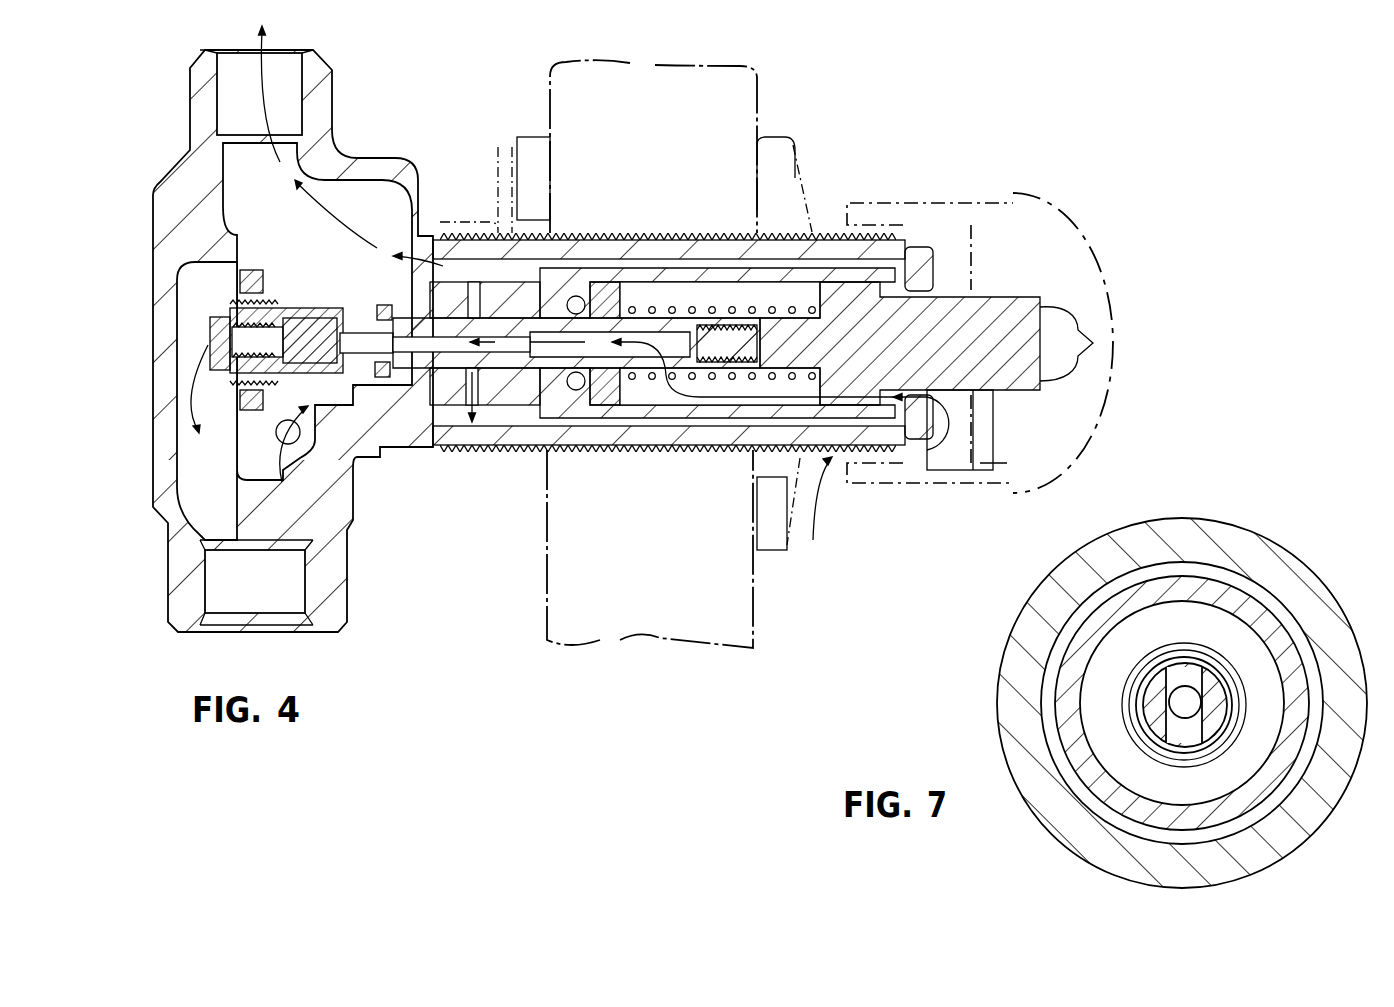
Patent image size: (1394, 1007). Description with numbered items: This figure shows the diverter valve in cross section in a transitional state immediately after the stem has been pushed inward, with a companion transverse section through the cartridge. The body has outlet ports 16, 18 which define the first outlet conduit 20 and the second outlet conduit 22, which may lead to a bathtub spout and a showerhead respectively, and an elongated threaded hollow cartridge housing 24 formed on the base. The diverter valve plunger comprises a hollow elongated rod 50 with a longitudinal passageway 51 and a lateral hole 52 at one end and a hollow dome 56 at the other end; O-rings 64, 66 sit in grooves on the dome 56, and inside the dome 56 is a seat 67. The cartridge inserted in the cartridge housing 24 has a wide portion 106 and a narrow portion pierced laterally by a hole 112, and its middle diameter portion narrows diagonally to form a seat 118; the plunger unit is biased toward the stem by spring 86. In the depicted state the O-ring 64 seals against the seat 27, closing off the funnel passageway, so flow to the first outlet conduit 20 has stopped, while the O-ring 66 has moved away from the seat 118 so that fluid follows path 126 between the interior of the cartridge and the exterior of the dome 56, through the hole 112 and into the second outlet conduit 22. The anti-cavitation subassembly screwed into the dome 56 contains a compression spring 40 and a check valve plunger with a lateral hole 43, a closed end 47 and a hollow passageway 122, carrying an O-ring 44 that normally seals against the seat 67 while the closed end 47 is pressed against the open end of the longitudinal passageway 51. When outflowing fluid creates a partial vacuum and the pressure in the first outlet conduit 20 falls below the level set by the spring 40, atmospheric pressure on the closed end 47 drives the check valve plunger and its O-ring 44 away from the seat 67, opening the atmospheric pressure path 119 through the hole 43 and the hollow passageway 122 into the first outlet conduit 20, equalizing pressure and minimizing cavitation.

In FIG. 4, the outlet port 16 is at (177, 587).
In FIG. 4, the outlet port 18 is at (327, 97).
In FIG. 4, the first outlet conduit 20 is at (245, 588).
In FIG. 4, the second outlet conduit 22 is at (225, 104).
In FIG. 7, the cartridge housing 24 is at (1228, 536).
In FIG. 4, the seat 27 is at (247, 268).
In FIG. 4, the compression spring 40 is at (230, 322).
In FIG. 4, the lateral hole 43 is at (303, 438).
In FIG. 4, the O-ring 44 is at (320, 322).
In FIG. 4, the closed end 47 is at (352, 314).
In FIG. 7, the rod 50 is at (1212, 690).
In FIG. 7, the longitudinal passageway 51 is at (1193, 708).
In FIG. 7, the lateral hole 52 is at (1180, 738).
In FIG. 4, the dome 56 is at (352, 290).
In FIG. 4, the O-ring 64 is at (238, 418).
In FIG. 4, the O-ring 66 is at (392, 396).
In FIG. 4, the seat 67 is at (356, 300).
In FIG. 7, the spring 86 is at (1152, 742).
In FIG. 7, the wide portion 106 is at (1060, 682).
In FIG. 4, the hole 112 is at (477, 290).
In FIG. 4, the seat 118 is at (716, 343).
In FIG. 4, the atmospheric pressure path 119 is at (188, 385).
In FIG. 4, the hollow passageway 122 is at (293, 340).
In FIG. 4, the path 126 is at (265, 72).